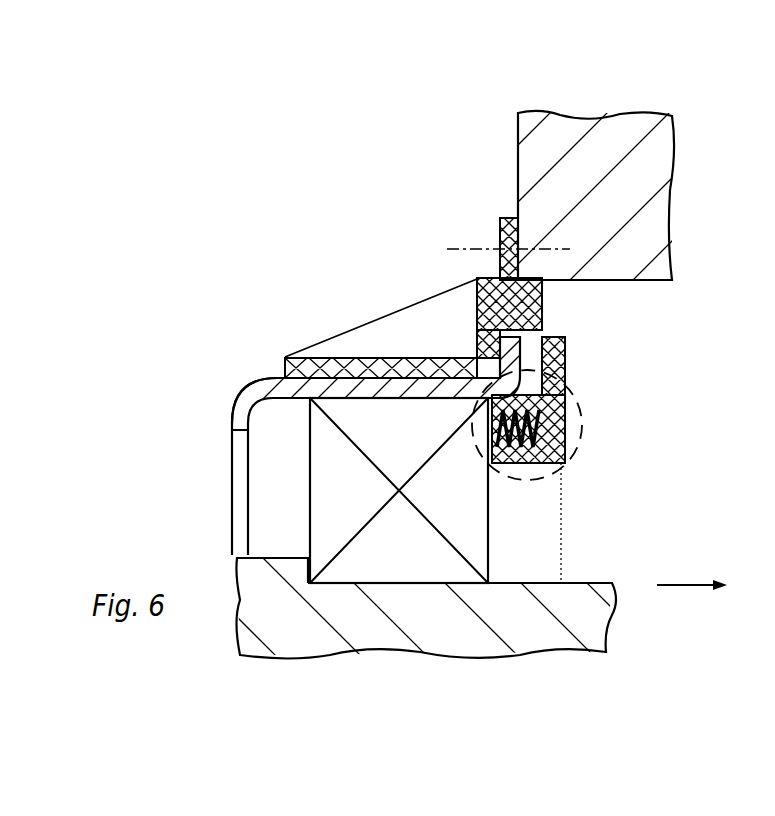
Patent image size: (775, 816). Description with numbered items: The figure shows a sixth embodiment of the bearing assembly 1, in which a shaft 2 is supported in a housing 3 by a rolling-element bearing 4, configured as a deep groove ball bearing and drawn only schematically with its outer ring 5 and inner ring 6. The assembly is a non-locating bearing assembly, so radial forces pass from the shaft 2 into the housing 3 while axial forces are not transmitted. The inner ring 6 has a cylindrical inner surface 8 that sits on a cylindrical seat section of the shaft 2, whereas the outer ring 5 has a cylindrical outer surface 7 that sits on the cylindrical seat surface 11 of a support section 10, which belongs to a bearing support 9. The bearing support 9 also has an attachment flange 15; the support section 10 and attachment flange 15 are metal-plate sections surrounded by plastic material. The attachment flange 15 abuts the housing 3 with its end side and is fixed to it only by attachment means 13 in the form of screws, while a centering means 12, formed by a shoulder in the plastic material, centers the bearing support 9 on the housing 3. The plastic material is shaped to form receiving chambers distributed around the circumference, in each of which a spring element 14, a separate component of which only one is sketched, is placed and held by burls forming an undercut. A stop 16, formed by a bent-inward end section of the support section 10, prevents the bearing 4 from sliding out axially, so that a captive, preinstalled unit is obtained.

The bearing assembly 1 is at (262, 162).
The shaft 2 is at (568, 632).
The housing 3 is at (638, 175).
The rolling-element bearing 4 is at (342, 472).
The outer ring 5 is at (362, 407).
The inner ring 6 is at (357, 572).
The cylindrical outer surface 7 is at (347, 396).
The cylindrical inner surface 8 is at (425, 588).
The bearing support 9 is at (540, 333).
The support section 10 is at (383, 396).
The cylindrical seat surface 11 is at (412, 396).
The centering means 12 is at (552, 263).
The attachment means 13 is at (460, 248).
The spring element 14 is at (518, 445).
The attachment flange 15 is at (508, 219).
The stop 16 is at (242, 415).